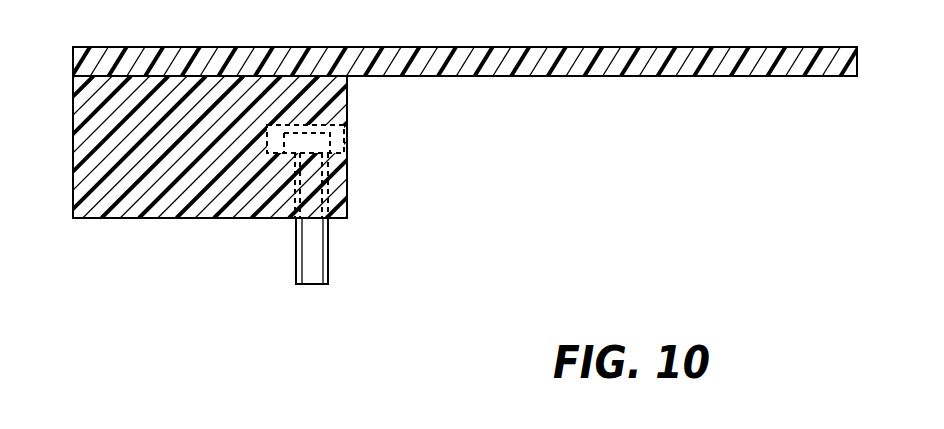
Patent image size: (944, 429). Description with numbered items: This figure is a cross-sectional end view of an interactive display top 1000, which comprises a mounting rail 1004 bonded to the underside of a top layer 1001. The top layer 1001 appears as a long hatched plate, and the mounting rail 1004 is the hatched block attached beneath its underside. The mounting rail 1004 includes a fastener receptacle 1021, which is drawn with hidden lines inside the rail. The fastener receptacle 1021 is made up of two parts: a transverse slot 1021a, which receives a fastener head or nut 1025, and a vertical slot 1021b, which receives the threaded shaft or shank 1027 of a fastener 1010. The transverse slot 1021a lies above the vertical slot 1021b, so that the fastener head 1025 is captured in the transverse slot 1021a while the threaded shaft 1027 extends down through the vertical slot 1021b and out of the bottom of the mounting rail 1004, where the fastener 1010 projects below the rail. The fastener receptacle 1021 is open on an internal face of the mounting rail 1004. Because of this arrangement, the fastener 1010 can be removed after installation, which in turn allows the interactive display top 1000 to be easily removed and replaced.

The interactive display top 1000 is at (219, 289).
The top layer 1001 is at (645, 78).
The mounting rail 1004 is at (140, 218).
The fastener 1010 is at (330, 257).
The fastener receptacle 1021 is at (348, 163).
The transverse slot 1021a is at (348, 125).
The vertical slot 1021b is at (348, 193).
The fastener head 1025 is at (341, 124).
The threaded shaft 1027 is at (296, 242).